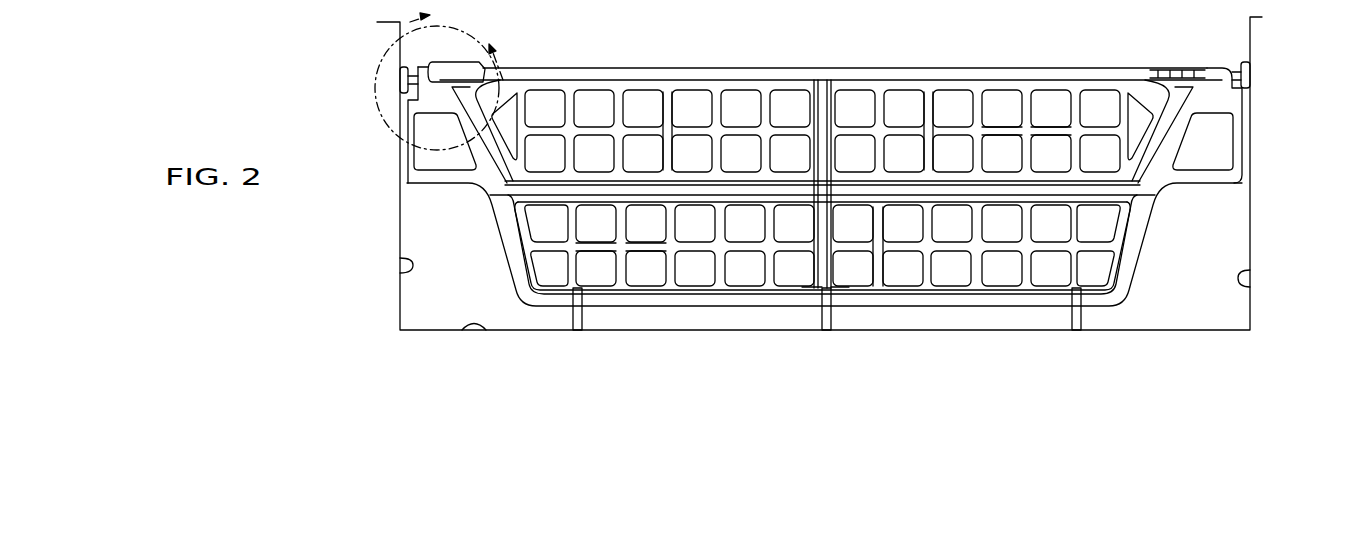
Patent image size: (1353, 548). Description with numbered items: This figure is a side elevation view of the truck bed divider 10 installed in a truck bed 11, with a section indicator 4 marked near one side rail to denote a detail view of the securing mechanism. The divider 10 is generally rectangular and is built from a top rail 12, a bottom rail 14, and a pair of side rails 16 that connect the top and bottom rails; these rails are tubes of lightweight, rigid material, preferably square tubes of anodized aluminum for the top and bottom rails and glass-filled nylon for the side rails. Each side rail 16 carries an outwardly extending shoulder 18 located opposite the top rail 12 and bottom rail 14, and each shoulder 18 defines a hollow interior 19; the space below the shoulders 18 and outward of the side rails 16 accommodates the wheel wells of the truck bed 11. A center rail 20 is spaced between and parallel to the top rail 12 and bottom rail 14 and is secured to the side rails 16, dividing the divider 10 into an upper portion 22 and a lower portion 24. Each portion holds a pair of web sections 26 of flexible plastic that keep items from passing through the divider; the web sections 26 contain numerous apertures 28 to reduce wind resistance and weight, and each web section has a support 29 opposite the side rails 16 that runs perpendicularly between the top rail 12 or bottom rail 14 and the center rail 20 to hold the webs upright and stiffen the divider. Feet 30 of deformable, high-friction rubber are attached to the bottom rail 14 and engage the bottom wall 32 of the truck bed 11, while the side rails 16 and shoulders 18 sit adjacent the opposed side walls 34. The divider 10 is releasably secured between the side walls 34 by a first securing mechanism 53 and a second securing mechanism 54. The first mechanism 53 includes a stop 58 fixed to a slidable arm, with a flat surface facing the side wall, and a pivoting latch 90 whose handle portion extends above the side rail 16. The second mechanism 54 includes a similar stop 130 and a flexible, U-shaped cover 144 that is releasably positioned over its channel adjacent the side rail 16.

The section line 4- 4 is at (439, 77).
The truck bed divider 10 is at (820, 52).
The truck bed 11 is at (432, 336).
The top rail 12 is at (822, 98).
The bottom rail 14 is at (822, 245).
The side rails 16 is at (508, 236).
The shoulder 18 is at (417, 184).
The hollow interior 19 is at (428, 146).
The center rail 20 is at (733, 194).
The upper portion 22 is at (693, 109).
The lower portion 24 is at (955, 270).
The web sections 26 is at (668, 108).
The apertures 28 is at (1048, 100).
The support 29 is at (815, 110).
The feet 30 is at (572, 322).
The bottom wall 32 is at (473, 334).
The side walls 34 is at (401, 265).
The first securing mechanism 53 is at (396, 97).
The second securing mechanism 54 is at (1179, 53).
The stop 58 is at (402, 79).
The pivoting latch 90 is at (430, 64).
The stop 130 is at (1251, 73).
The cover 144 is at (1158, 68).